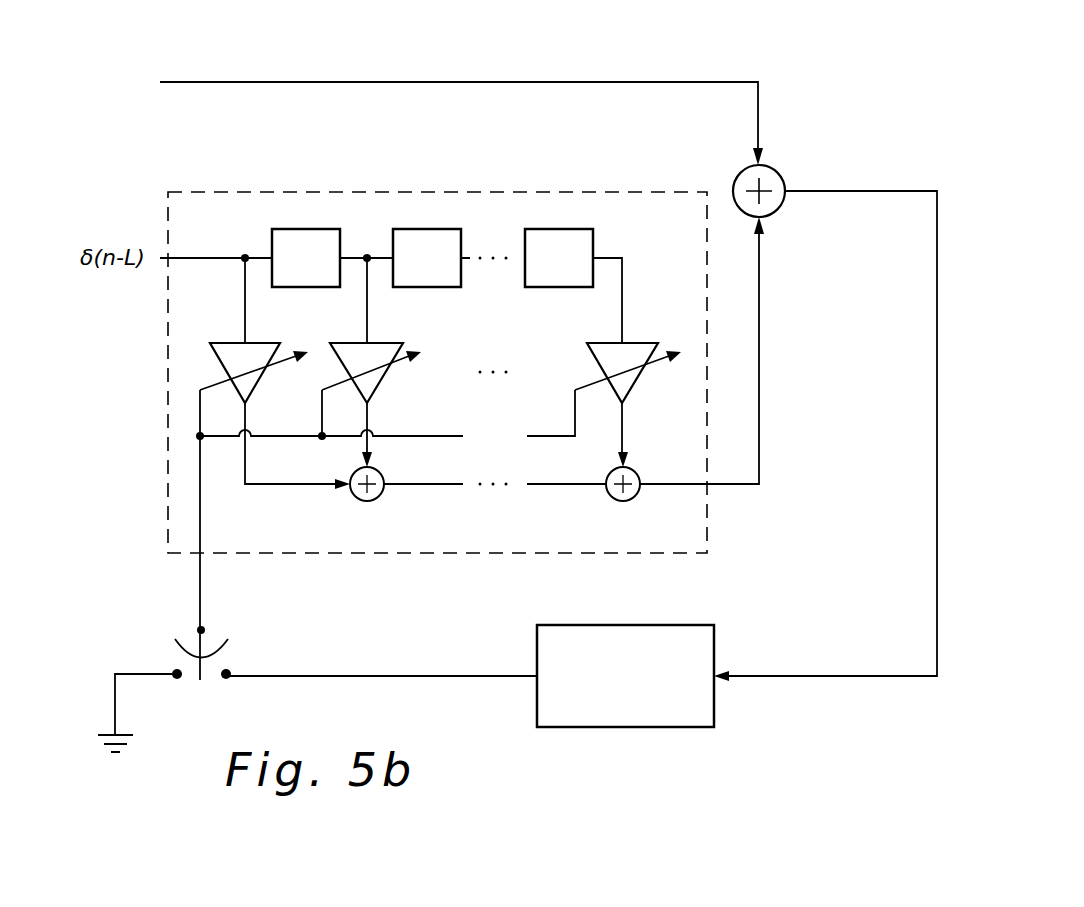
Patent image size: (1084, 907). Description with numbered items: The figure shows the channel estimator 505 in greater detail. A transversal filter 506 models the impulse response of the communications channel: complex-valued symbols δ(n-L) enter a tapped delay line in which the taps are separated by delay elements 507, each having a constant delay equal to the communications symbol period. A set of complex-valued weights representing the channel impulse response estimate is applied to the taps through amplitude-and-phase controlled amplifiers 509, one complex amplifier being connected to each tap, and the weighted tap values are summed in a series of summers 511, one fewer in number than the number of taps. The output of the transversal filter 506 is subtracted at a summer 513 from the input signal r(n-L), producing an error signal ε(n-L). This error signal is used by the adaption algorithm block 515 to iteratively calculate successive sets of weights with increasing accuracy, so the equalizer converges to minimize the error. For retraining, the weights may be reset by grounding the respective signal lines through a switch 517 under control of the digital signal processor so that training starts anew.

The channel estimator 505 is at (700, 68).
The transversal filter 506 is at (168, 453).
The delay element 507 is at (610, 242).
The amplitude-and-phase controlled amplifier 509 is at (680, 374).
The summer 511 is at (660, 503).
The error summer 513 is at (782, 174).
The adaption algorithm block 515 is at (624, 728).
The switch 517 is at (246, 645).